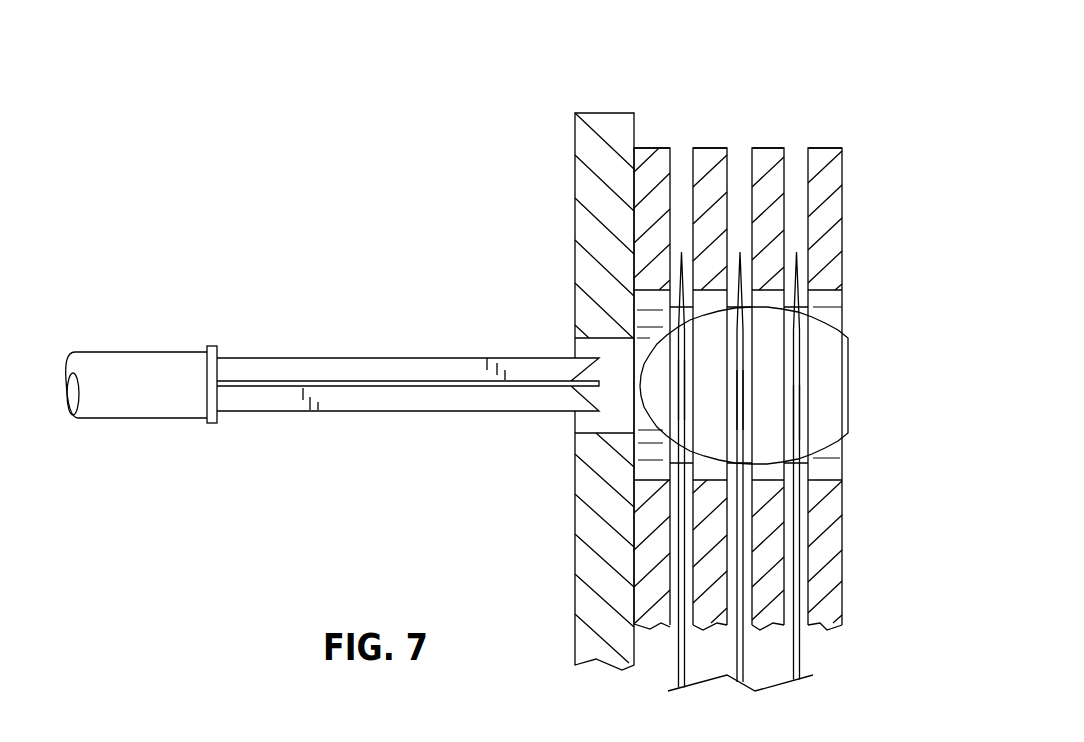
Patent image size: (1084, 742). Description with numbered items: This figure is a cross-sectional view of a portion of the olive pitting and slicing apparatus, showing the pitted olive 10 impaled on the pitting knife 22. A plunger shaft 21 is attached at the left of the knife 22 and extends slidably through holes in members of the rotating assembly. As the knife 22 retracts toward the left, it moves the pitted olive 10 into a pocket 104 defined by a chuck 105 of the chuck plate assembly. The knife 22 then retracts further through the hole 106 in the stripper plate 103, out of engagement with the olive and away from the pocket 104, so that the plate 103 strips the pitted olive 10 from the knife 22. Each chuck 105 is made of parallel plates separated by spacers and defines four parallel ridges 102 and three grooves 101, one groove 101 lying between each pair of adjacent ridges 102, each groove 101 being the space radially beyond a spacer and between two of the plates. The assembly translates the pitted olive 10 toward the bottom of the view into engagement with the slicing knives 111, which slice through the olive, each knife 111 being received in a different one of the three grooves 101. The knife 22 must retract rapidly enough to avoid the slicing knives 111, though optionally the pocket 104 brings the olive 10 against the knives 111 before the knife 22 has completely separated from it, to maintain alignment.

The pitted olive 10 is at (840, 367).
The plunger shaft 21 is at (100, 351).
The pitting knife 22 is at (270, 358).
The groove 101 is at (792, 218).
The ridge 102 is at (827, 148).
The stripper plate 103 is at (585, 142).
The pocket 104 is at (793, 260).
The chuck 105 is at (717, 598).
The hole 106 is at (583, 350).
The slicing knife 111 is at (795, 403).